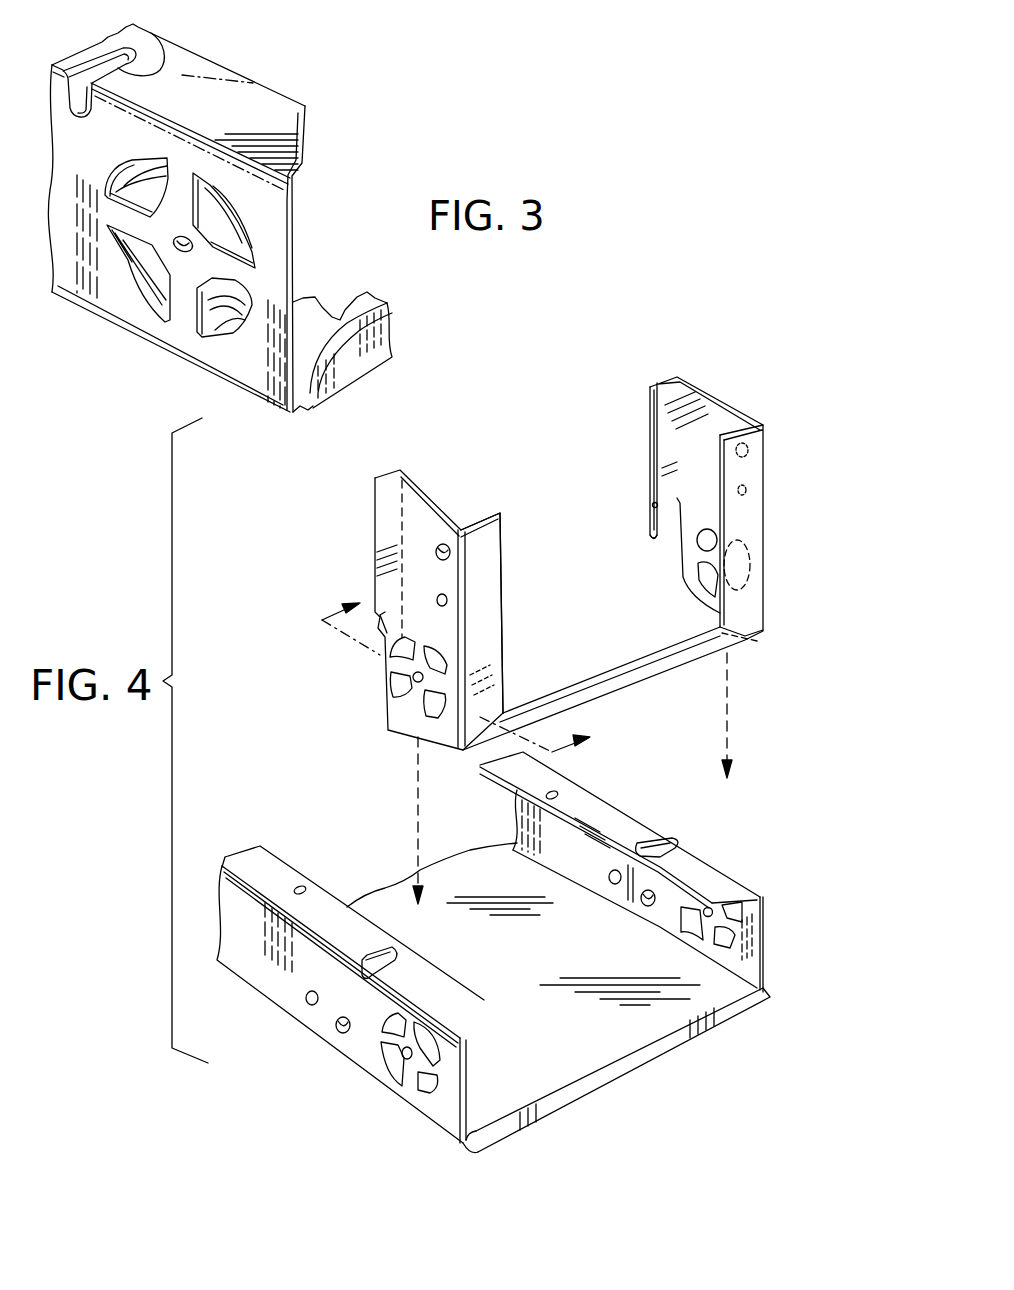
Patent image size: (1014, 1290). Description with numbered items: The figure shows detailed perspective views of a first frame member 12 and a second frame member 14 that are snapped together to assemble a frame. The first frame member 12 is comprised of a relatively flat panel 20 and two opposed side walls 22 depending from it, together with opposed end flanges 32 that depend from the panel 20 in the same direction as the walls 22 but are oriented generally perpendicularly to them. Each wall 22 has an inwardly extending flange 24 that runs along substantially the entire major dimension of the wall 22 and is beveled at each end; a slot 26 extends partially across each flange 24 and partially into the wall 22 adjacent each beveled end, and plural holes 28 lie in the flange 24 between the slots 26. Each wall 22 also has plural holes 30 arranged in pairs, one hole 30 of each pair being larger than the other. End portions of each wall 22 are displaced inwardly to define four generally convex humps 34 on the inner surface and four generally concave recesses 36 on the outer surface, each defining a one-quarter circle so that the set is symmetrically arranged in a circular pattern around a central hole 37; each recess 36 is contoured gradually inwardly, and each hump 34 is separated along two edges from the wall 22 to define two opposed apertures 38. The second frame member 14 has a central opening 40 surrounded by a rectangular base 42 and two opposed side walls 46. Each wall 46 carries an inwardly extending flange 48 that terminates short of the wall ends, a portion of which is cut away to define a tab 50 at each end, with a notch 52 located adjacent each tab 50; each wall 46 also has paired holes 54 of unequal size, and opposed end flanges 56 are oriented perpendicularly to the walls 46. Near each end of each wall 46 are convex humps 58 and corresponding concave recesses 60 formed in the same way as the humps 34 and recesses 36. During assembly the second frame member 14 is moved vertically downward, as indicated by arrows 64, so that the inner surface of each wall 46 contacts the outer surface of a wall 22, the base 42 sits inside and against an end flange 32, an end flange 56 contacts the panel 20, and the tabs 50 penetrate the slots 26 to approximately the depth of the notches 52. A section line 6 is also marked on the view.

In FIG. 3, the first frame member 12 is at (296, 200).
In FIG. 4, the first frame member 12 is at (505, 952).
In FIG. 4, the second frame member 14 is at (548, 556).
In FIG. 3, the panel 20 is at (326, 316).
In FIG. 4, the panel 20 is at (593, 1047).
In FIG. 4, the side wall 22 is at (275, 978).
In FIG. 3, the flange 24 is at (292, 113).
In FIG. 4, the flange 24 is at (262, 866).
In FIG. 3, the slot 26 is at (157, 46).
In FIG. 4, the slot 26 is at (400, 967).
In FIG. 4, the hole 28 is at (304, 890).
In FIG. 4, the hole 30 is at (312, 1005).
In FIG. 3, the end flange 32 is at (382, 345).
In FIG. 4, the end flange 32 is at (580, 1090).
In FIG. 4, the hump 34 is at (688, 946).
In FIG. 3, the recess 36 is at (130, 163).
In FIG. 4, the recess 36 is at (433, 1085).
In FIG. 3, the hole 37 is at (176, 250).
In FIG. 3, the aperture 38 is at (108, 198).
In FIG. 4, the central opening 40 is at (620, 617).
In FIG. 4, the base 42 is at (750, 517).
In FIG. 4, the side wall 46 is at (433, 503).
In FIG. 4, the flange 48 is at (402, 474).
In FIG. 4, the tab 50 is at (672, 532).
In FIG. 4, the notch 52 is at (652, 504).
In FIG. 4, the hole 54 is at (452, 555).
In FIG. 4, the end flange 56 is at (563, 678).
In FIG. 4, the hump 58 is at (702, 580).
In FIG. 4, the recess 60 is at (432, 708).
In FIG. 4, the arrow 64 is at (732, 727).
In FIG. 4, the section line 6 is at (463, 665).